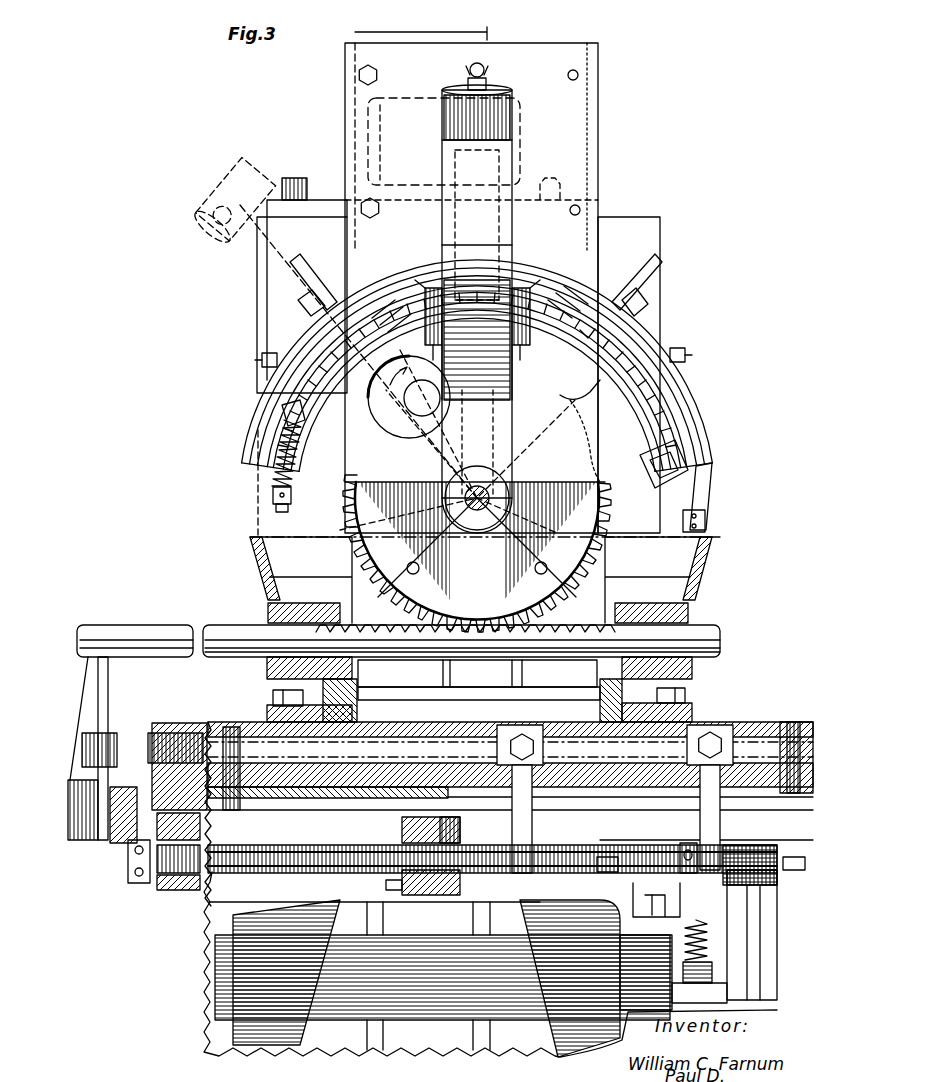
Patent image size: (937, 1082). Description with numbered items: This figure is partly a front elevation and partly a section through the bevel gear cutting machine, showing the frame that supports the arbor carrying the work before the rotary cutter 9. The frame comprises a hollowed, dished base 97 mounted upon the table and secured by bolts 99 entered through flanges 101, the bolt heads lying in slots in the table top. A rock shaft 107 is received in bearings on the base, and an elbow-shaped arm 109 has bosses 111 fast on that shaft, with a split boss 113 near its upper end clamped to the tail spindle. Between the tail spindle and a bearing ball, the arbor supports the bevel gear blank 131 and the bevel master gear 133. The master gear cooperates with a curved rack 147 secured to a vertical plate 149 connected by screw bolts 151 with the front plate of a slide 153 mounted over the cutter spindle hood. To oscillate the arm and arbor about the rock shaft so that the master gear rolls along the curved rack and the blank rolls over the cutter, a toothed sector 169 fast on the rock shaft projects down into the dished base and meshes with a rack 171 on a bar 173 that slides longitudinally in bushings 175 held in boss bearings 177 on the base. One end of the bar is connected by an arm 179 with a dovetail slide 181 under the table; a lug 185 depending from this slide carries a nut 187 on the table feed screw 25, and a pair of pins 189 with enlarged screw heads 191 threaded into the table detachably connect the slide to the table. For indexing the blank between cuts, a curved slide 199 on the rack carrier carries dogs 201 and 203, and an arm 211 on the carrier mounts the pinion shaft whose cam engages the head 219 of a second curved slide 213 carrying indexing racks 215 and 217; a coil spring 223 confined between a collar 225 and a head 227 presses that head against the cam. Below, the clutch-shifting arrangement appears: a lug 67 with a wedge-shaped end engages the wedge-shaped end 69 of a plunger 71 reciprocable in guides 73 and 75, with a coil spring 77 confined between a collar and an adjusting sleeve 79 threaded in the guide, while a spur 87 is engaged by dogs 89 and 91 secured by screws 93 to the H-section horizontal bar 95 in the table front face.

The rotary cutter 9 is at (403, 438).
The screw 25 is at (300, 874).
The lug 67 is at (680, 870).
The wedge-shaped end 69 is at (672, 905).
The plunger 71 is at (712, 945).
The guide 73 is at (654, 915).
The guide 75 is at (714, 994).
The coil spring 77 is at (680, 955).
The adjusting sleeve 79 is at (714, 970).
The spur 87 is at (608, 872).
The dog 89 is at (533, 830).
The dog 91 is at (700, 828).
The screw 93 is at (520, 740).
The horizontal bar 95 is at (408, 738).
The base 97 is at (698, 560).
The bolt 99 is at (278, 698).
The flange 101 is at (268, 716).
The rock shaft 107 is at (490, 498).
The elbow-shaped arm 109 is at (520, 430).
The boss 111 is at (500, 482).
The boss 113 is at (512, 115).
The bevel gear blank 131 is at (502, 400).
The bevel master gear 133 is at (498, 307).
The curved rack 147 is at (514, 275).
The vertical plate 149 is at (588, 141).
The screw bolt 151 is at (358, 75).
The slide 153 is at (490, 33).
The toothed sector 169 is at (372, 512).
The rack 171 is at (461, 628).
The bar 173 is at (168, 625).
The bushing 175 is at (268, 613).
The boss bearing 177 is at (720, 572).
The arm 179 is at (106, 694).
The dovetail slide 181 is at (125, 790).
The lug 185 is at (402, 825).
The nut 187 is at (402, 880).
The pin 189 is at (185, 723).
The screw head 191 is at (231, 727).
The curved slide 199 is at (388, 285).
The dog 201 is at (290, 264).
The dog 203 is at (648, 266).
The arm 211 is at (600, 485).
The curved slide 213 is at (571, 364).
The indexing rack 215 is at (335, 358).
The indexing rack 217 is at (600, 350).
The head 219 is at (690, 450).
The coil spring 223 is at (276, 453).
The collar 225 is at (272, 494).
The head 227 is at (283, 412).